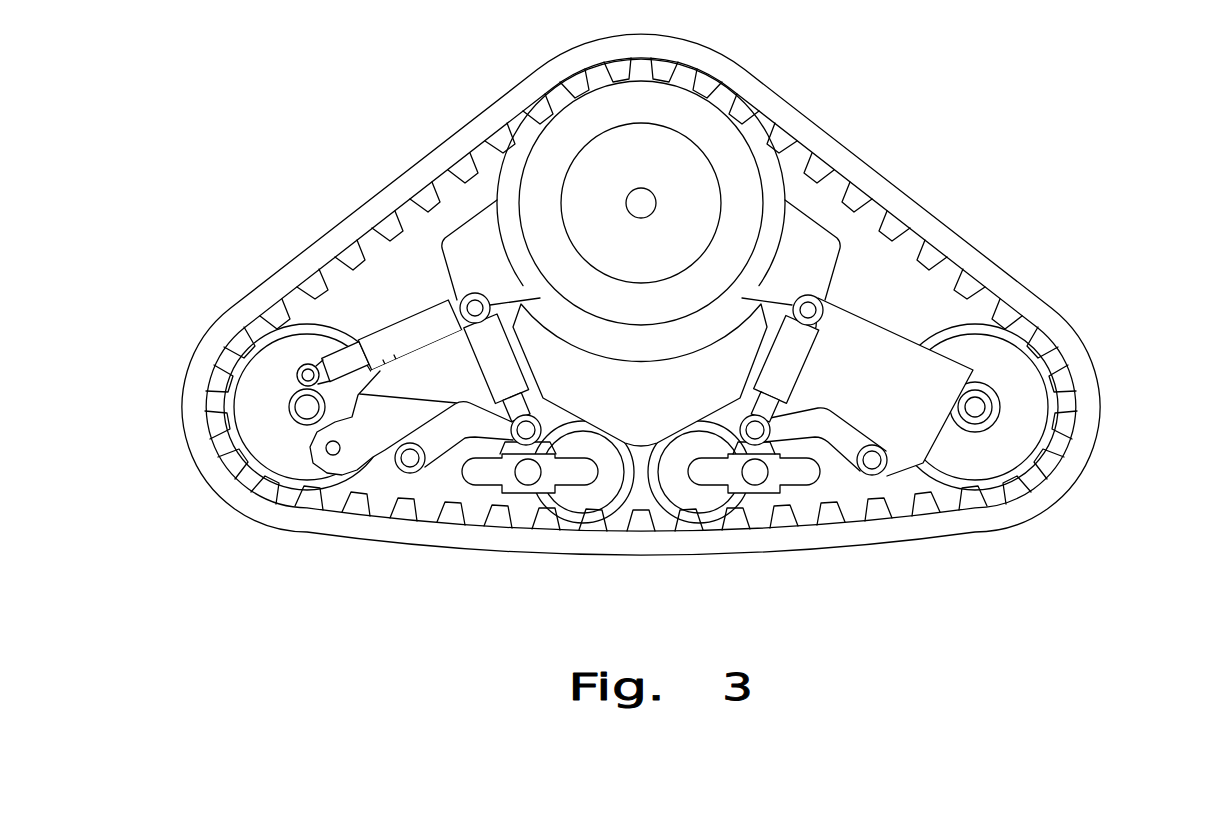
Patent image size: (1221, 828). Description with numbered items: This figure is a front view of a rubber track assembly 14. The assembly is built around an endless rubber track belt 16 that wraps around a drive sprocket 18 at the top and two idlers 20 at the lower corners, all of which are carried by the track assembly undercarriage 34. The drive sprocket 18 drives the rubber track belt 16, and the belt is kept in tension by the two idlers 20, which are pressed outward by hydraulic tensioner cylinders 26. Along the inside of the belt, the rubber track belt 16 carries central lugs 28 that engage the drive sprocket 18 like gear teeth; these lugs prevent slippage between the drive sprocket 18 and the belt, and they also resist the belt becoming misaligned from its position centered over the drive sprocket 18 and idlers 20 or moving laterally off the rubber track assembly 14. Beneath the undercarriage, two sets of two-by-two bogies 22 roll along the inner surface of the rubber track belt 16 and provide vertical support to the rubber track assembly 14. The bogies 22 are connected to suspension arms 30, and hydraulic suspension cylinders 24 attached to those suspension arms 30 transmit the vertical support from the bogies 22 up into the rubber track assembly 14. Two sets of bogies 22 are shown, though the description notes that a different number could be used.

The rubber track assembly 14 is at (654, 328).
The rubber track belt 16 is at (980, 247).
The drive sprocket 18 is at (767, 162).
The idlers 20 is at (253, 445).
The 2×2 bogies 22 is at (477, 510).
The hydraulic suspension cylinders 24 is at (459, 306).
The hydraulic tensioner cylinders 26 is at (398, 317).
The central lugs 28 is at (913, 250).
The suspension arms 30 is at (802, 435).
The track assembly undercarriage 34 is at (660, 413).